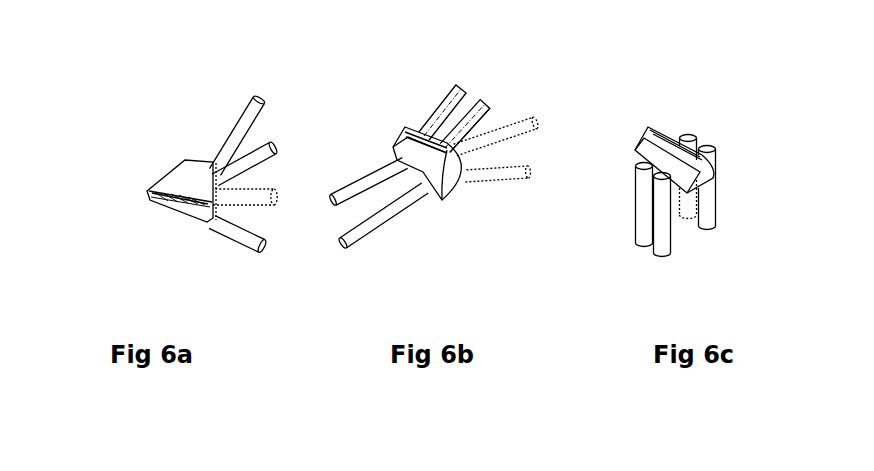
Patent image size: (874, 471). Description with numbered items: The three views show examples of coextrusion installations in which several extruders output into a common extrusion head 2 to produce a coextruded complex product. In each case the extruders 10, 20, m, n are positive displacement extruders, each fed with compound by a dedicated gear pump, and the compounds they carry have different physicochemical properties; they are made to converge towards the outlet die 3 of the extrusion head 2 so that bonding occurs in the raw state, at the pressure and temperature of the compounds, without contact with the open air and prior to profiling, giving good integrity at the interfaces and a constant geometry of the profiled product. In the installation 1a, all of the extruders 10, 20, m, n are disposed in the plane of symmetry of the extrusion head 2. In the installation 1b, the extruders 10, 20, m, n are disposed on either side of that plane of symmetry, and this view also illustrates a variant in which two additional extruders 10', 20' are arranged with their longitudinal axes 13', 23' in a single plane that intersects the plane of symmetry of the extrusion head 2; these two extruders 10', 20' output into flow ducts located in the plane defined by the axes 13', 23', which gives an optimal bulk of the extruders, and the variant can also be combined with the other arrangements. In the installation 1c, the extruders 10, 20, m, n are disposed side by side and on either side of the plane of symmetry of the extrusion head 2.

In FIG. 6A, the installation 1a is at (93, 111).
In FIG. 6B, the installation 1b is at (363, 92).
In FIG. 6C, the installation 1c is at (733, 80).
In FIG. 6A, the extrusion head 2 is at (158, 180).
In FIG. 6B, the extrusion head 2 is at (415, 142).
In FIG. 6C, the extrusion head 2 is at (700, 173).
In FIG. 6A, the outlet die 3 is at (150, 194).
In FIG. 6B, the outlet die 3 is at (415, 128).
In FIG. 6C, the outlet die 3 is at (672, 132).
In FIG. 6A, the extruder 10 is at (237, 109).
In FIG. 6B, the extruder 10 is at (369, 168).
In FIG. 6C, the extruder 10 is at (729, 163).
In FIG. 6A, the extruder 20 is at (256, 136).
In FIG. 6B, the extruder 20 is at (383, 239).
In FIG. 6C, the extruder 20 is at (753, 208).
In FIG. 6B, the additional extruder 10' is at (437, 85).
In FIG. 6B, the longitudinal axis 13' is at (467, 86).
In FIG. 6B, the longitudinal axis 23' is at (494, 101).
In FIG. 6B, the additional extruder 20' is at (509, 119).
In FIG. 6A, the extruder m is at (276, 189).
In FIG. 6B, the extruder m is at (542, 123).
In FIG. 6C, the extruder m is at (640, 225).
In FIG. 6A, the extruder n is at (262, 252).
In FIG. 6B, the extruder n is at (517, 176).
In FIG. 6C, the extruder n is at (660, 247).